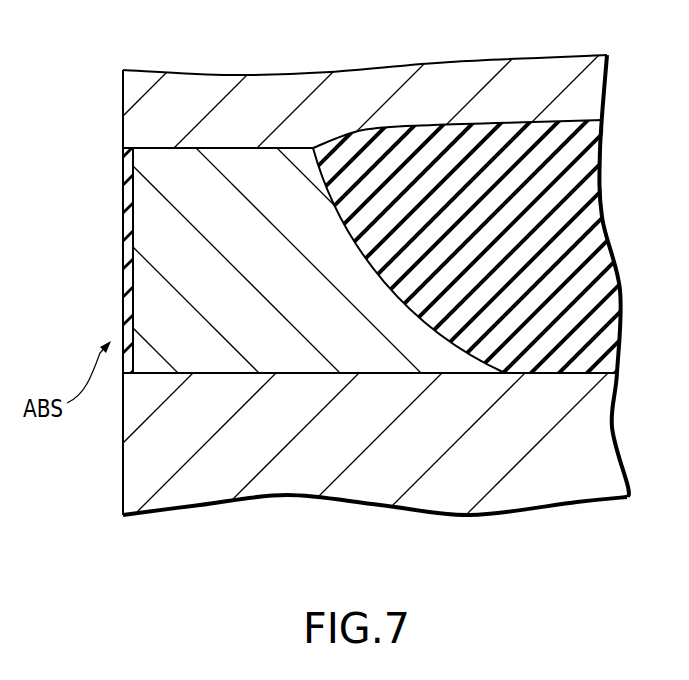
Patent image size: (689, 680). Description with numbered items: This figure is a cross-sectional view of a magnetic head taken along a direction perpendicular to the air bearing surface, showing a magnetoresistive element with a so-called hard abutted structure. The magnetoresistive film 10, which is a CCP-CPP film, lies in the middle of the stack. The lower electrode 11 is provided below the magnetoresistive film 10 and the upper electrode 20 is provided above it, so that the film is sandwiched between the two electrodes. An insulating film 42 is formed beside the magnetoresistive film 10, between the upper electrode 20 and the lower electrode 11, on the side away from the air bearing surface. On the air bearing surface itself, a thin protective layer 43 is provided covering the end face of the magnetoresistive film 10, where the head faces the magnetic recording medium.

The magnetoresistive film 10 is at (285, 212).
The lower electrode 11 is at (413, 483).
The upper electrode 20 is at (240, 118).
The insulating film 42 is at (512, 157).
The protective layer 43 is at (136, 167).